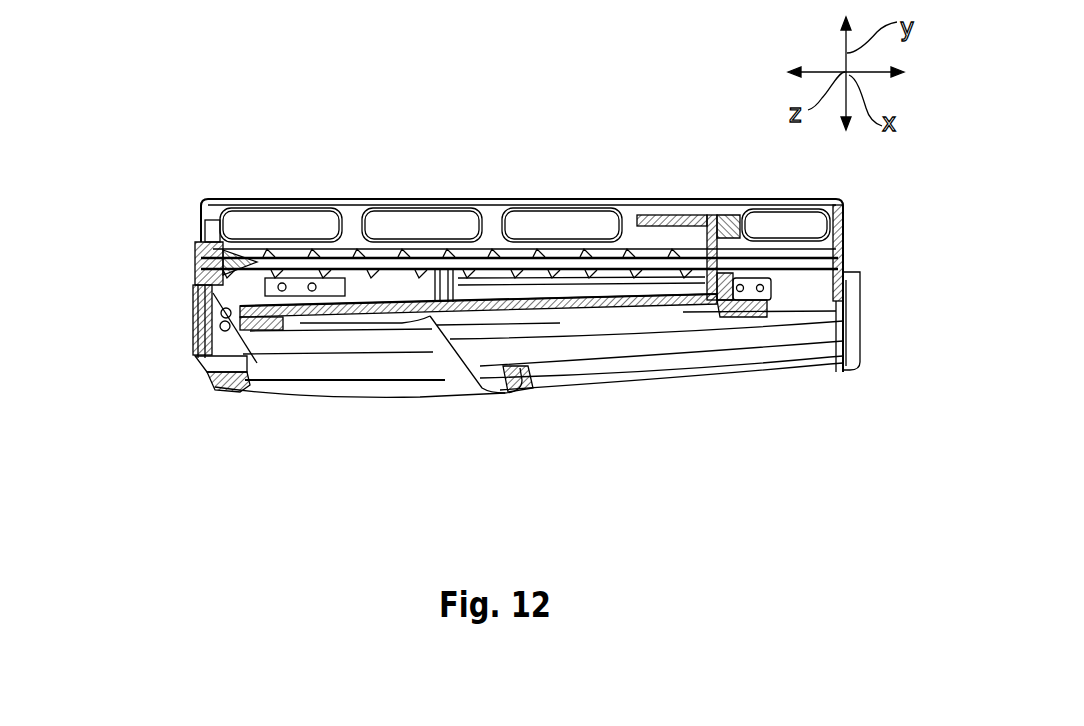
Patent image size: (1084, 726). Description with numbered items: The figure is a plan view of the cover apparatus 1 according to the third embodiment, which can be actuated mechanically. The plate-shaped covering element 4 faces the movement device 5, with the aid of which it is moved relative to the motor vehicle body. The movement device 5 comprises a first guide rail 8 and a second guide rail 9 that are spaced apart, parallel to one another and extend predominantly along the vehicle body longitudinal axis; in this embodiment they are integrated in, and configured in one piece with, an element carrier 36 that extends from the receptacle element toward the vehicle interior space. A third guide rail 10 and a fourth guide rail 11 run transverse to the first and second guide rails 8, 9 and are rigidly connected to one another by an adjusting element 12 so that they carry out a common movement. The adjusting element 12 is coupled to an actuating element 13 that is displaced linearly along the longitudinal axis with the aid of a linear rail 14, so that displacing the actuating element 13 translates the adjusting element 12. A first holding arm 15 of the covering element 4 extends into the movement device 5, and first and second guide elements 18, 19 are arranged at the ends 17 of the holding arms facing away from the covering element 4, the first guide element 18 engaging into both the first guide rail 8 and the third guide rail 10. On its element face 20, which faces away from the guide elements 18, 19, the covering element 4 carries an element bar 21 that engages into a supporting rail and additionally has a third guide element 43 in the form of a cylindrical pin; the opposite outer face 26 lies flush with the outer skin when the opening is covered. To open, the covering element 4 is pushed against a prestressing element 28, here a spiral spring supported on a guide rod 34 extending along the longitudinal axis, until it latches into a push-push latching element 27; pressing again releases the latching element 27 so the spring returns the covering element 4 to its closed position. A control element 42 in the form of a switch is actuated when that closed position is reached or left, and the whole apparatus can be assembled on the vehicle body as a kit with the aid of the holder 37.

The cover apparatus 1 is at (860, 254).
The covering element 4 is at (382, 393).
The movement device 5 is at (180, 293).
The first guide rail 8 is at (545, 322).
The second guide rail 9 is at (680, 287).
The third guide rail 10 is at (198, 370).
The fourth guide rail 11 is at (408, 300).
The adjusting element 12 is at (193, 317).
The actuating element 13 is at (197, 248).
The linear rail 14 is at (613, 326).
The first holding arm 15 is at (290, 340).
The ends of the holding arms 17 is at (395, 290).
The first guide element 18 is at (200, 333).
The second guide element 19 is at (415, 302).
The element face 20 is at (428, 398).
The element bar 21 is at (527, 385).
The outer face 26 is at (655, 354).
The latching element 27 is at (738, 290).
The prestressing element 28 is at (445, 232).
The guide rod 34 is at (651, 260).
The element carrier 36 is at (593, 275).
The holder 37 is at (717, 210).
The control element 42 is at (242, 392).
The third guide element 43 is at (533, 380).